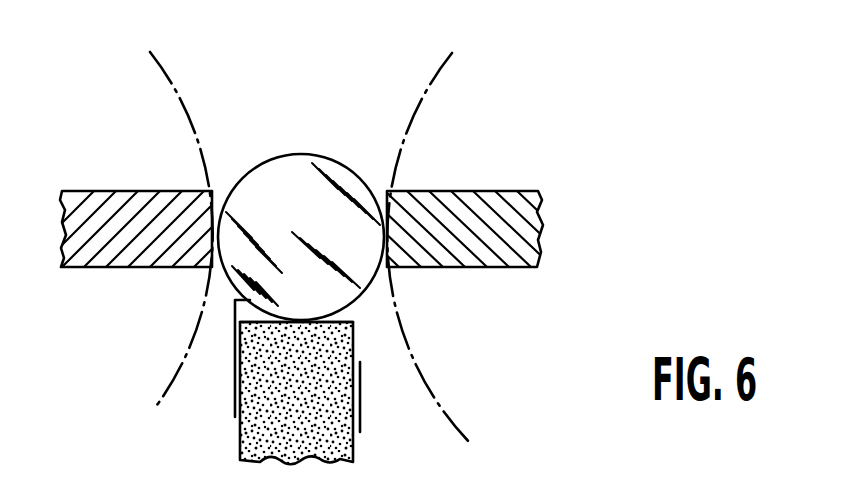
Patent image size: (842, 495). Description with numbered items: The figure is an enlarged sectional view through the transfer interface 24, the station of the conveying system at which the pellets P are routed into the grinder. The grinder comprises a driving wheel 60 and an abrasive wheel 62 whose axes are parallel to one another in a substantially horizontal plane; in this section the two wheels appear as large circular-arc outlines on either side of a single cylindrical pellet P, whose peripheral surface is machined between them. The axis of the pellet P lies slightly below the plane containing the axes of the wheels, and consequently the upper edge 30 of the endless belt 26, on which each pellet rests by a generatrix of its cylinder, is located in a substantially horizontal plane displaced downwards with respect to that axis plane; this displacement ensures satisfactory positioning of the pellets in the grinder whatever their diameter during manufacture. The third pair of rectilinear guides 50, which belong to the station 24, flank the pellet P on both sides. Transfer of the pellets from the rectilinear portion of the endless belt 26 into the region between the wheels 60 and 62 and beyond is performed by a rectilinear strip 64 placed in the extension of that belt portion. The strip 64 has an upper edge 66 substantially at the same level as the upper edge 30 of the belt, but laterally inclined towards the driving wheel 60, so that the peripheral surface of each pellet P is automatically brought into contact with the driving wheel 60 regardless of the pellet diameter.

The transfer interface 24 is at (250, 112).
The endless belt 26 is at (240, 446).
The upper edge 30 is at (343, 321).
The third pair of rectilinear guides 50 is at (112, 213).
The driving wheel 60 is at (439, 70).
The abrasive wheel 62 is at (156, 70).
The rectilinear strip 64 is at (361, 405).
The upper edge 66 is at (240, 318).
The pellets P is at (298, 190).